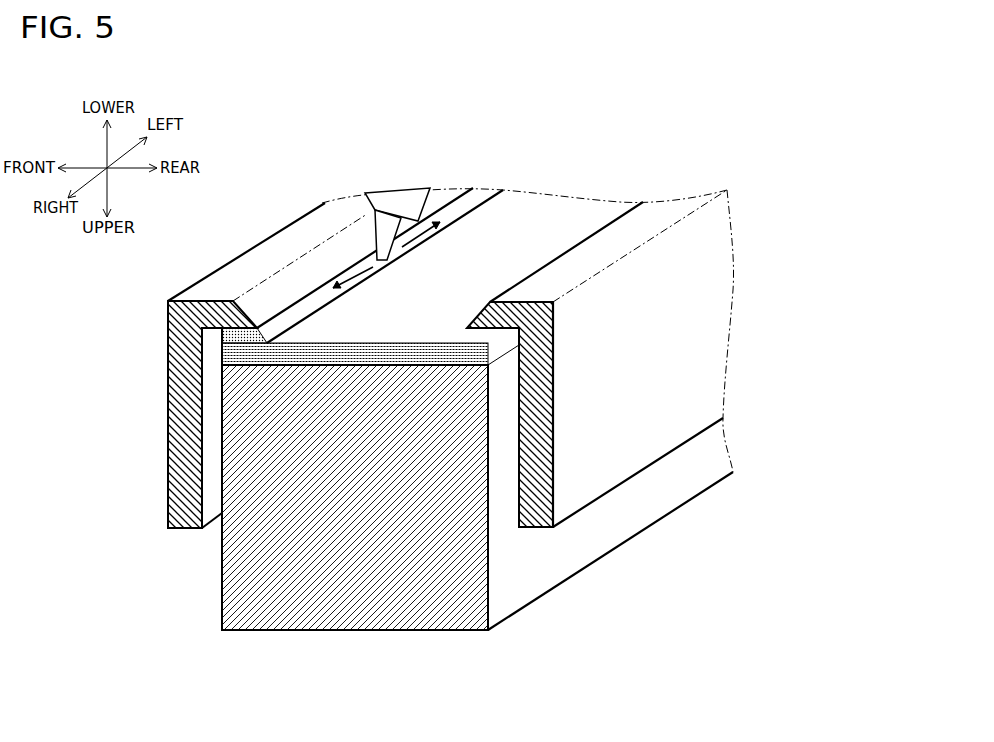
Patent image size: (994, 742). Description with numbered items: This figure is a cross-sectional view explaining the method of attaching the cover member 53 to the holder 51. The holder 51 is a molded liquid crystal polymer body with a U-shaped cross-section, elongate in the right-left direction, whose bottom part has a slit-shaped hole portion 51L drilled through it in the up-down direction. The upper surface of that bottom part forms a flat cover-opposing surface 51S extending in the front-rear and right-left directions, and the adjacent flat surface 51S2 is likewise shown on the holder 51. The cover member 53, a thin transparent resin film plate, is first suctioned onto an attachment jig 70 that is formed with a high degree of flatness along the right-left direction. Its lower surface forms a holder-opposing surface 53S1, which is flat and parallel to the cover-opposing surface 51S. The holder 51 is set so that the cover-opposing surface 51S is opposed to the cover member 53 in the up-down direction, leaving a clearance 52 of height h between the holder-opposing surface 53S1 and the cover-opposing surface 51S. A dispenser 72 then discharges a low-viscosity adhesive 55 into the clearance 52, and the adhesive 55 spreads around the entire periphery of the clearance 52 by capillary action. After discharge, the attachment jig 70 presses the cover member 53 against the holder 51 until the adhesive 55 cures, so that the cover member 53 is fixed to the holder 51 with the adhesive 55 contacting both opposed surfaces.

The holder 51 is at (168, 353).
The hole portion 51L is at (492, 215).
The cover-opposing surface 51S is at (222, 334).
The support surface of holding member 51S2 is at (440, 367).
The clearance 52 is at (168, 317).
The cover member 53 is at (583, 205).
The holder-opposing surface 53S1 is at (278, 320).
The adhesive 55 is at (315, 343).
The attachment jig 70 is at (223, 558).
The dispenser 72 is at (365, 193).